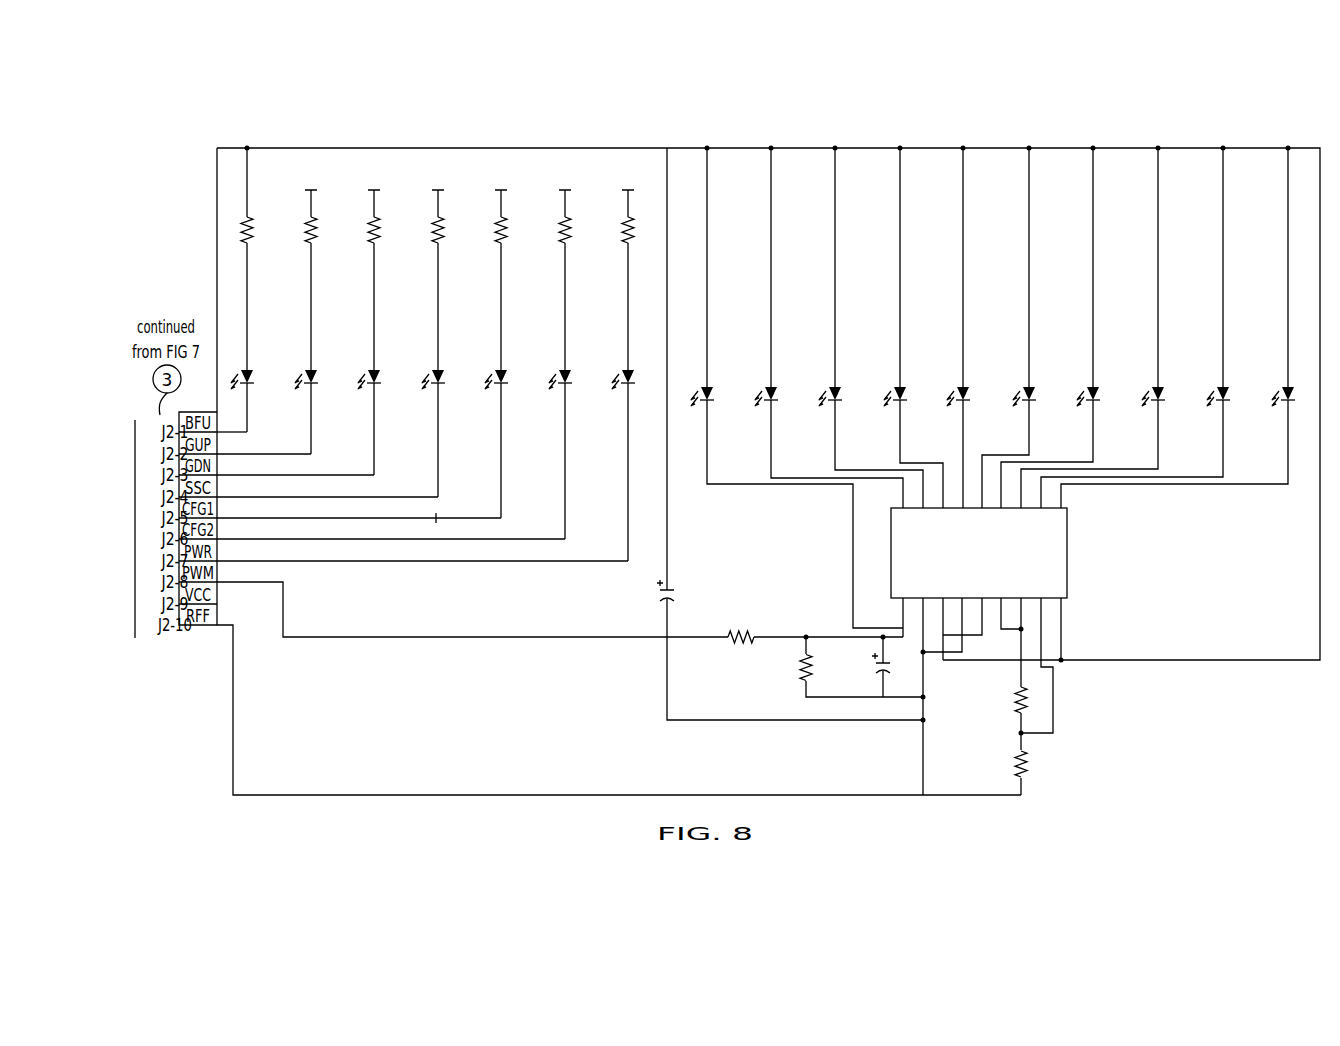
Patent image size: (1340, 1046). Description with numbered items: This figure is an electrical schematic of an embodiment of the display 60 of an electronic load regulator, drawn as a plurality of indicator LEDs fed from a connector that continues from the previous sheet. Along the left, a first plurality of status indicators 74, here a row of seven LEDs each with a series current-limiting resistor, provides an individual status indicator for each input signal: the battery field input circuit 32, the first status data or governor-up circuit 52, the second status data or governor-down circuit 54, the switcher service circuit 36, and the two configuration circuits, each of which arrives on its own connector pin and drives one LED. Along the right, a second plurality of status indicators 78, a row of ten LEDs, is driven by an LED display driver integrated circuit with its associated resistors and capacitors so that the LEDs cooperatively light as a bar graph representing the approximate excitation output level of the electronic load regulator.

The first plurality of status indicators 74 is at (439, 134).
The second plurality of status indicators 78 is at (1055, 134).
The display 60 is at (1183, 688).
The battery field input circuit 32 is at (273, 427).
The first status data or GUP circuit 52 is at (357, 450).
The second status data or GDN circuit 54 is at (300, 475).
The switcher service SSC circuit 36 is at (362, 495).